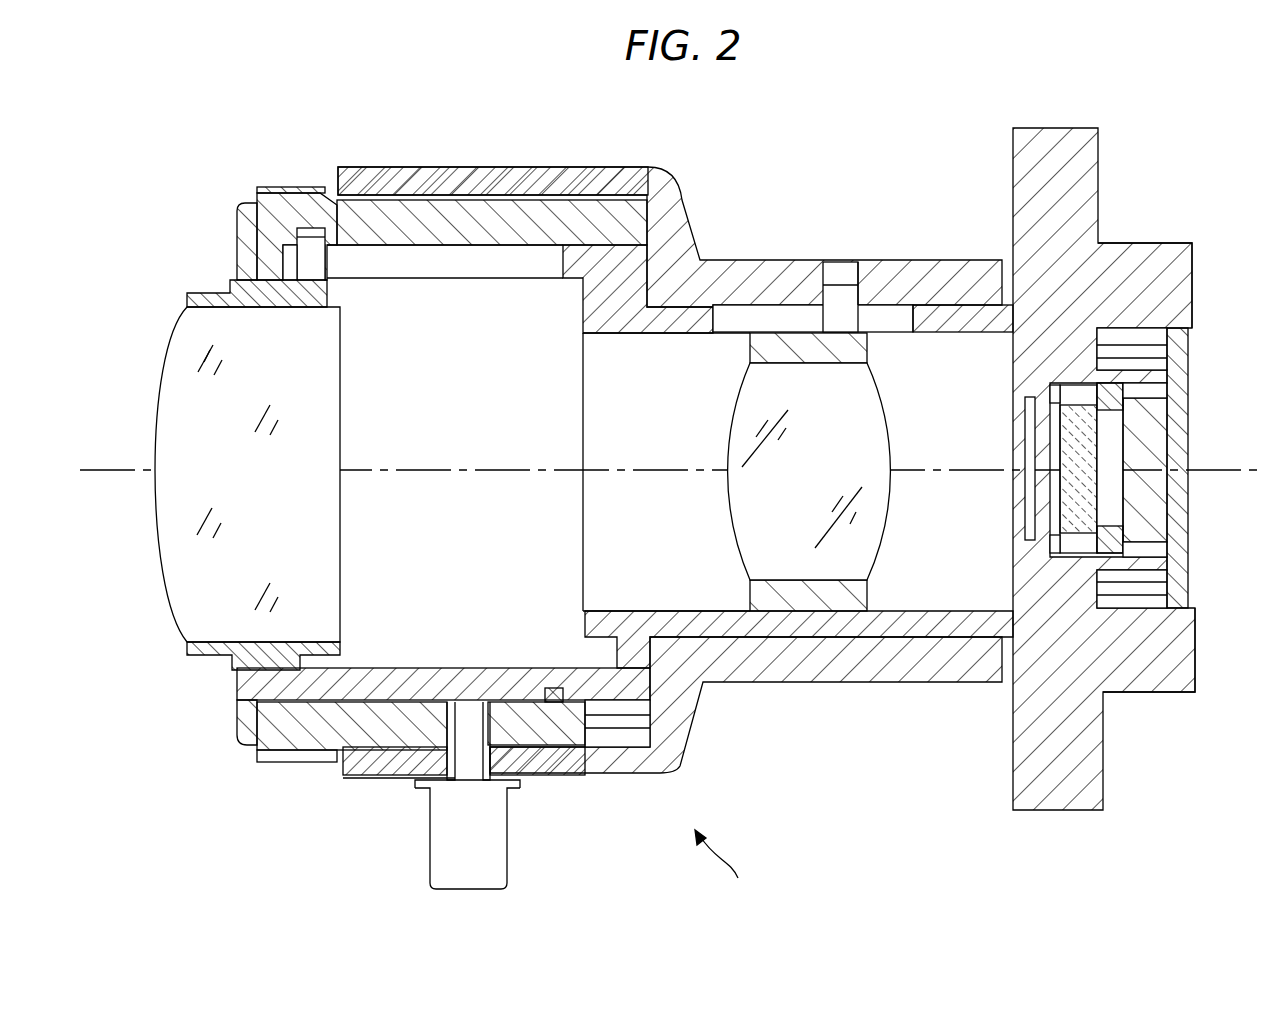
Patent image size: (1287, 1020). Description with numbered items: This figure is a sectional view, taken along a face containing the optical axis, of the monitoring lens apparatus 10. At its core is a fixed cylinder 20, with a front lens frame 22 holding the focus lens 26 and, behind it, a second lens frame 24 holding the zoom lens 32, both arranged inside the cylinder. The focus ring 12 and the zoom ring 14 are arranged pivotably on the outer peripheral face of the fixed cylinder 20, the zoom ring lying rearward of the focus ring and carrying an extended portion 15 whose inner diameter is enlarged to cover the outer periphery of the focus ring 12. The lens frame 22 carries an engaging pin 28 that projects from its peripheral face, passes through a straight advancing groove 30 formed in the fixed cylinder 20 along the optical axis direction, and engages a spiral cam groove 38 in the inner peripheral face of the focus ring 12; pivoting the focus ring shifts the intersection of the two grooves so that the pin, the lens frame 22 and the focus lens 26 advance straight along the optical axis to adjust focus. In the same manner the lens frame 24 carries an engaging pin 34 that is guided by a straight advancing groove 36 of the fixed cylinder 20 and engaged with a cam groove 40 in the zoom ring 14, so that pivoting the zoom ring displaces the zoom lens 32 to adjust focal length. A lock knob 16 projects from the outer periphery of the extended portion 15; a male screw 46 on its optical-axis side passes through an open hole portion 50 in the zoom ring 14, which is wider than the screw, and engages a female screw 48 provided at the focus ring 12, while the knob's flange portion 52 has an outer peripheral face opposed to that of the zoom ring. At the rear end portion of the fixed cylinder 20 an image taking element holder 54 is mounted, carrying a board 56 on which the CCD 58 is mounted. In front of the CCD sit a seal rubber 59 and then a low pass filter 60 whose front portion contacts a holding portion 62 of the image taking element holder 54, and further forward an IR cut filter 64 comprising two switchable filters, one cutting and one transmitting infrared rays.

The monitoring lens apparatus 10 is at (724, 870).
The focus ring 12 is at (312, 207).
The zoom ring 14 is at (918, 280).
The extended portion 15 is at (523, 187).
The lock knob 16 is at (485, 835).
The fixed cylinder 20 is at (593, 257).
The lens frame 22 is at (190, 300).
The lens frame 24 is at (778, 345).
The focus lens 26 is at (160, 440).
The engaging pin 28 is at (350, 225).
The straight advancing groove 30 is at (437, 250).
The zoom lens 32 is at (735, 445).
The engaging pin 34 is at (853, 300).
The straight advancing groove 36 is at (737, 318).
The cam groove 38 is at (265, 190).
The cam groove 40 is at (828, 265).
The male screw 46 is at (460, 760).
The female screw 48 is at (525, 745).
The open hole portion 50 is at (420, 770).
The flange portion 52 is at (418, 790).
The image taking element holder 54 is at (1180, 275).
The board 56 is at (1186, 450).
The CCD 58 is at (1150, 410).
The seal rubber 59 is at (1118, 545).
The low pass filter 60 is at (1065, 545).
The holding portion 62 is at (1053, 395).
The IR cut filter 64 is at (1030, 500).